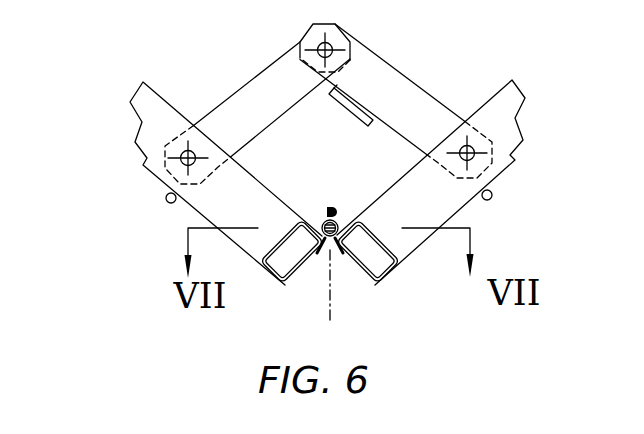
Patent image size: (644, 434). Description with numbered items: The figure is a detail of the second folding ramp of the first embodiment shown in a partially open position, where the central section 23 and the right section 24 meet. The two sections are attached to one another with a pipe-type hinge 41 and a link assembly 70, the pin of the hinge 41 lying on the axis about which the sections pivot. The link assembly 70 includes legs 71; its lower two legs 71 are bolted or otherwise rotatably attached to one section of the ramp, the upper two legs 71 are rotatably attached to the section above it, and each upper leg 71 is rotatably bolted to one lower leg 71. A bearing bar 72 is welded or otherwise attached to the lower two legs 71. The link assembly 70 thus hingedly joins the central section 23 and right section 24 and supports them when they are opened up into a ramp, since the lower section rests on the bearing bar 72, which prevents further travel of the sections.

The central section of second folding ramp 23 is at (523, 140).
The right section of second folding ramp 24 is at (135, 142).
The pipe-type hinges 41 is at (335, 220).
The link assemblies 70 is at (328, 92).
The legs 71 is at (245, 83).
The bearing bar 72 is at (352, 107).